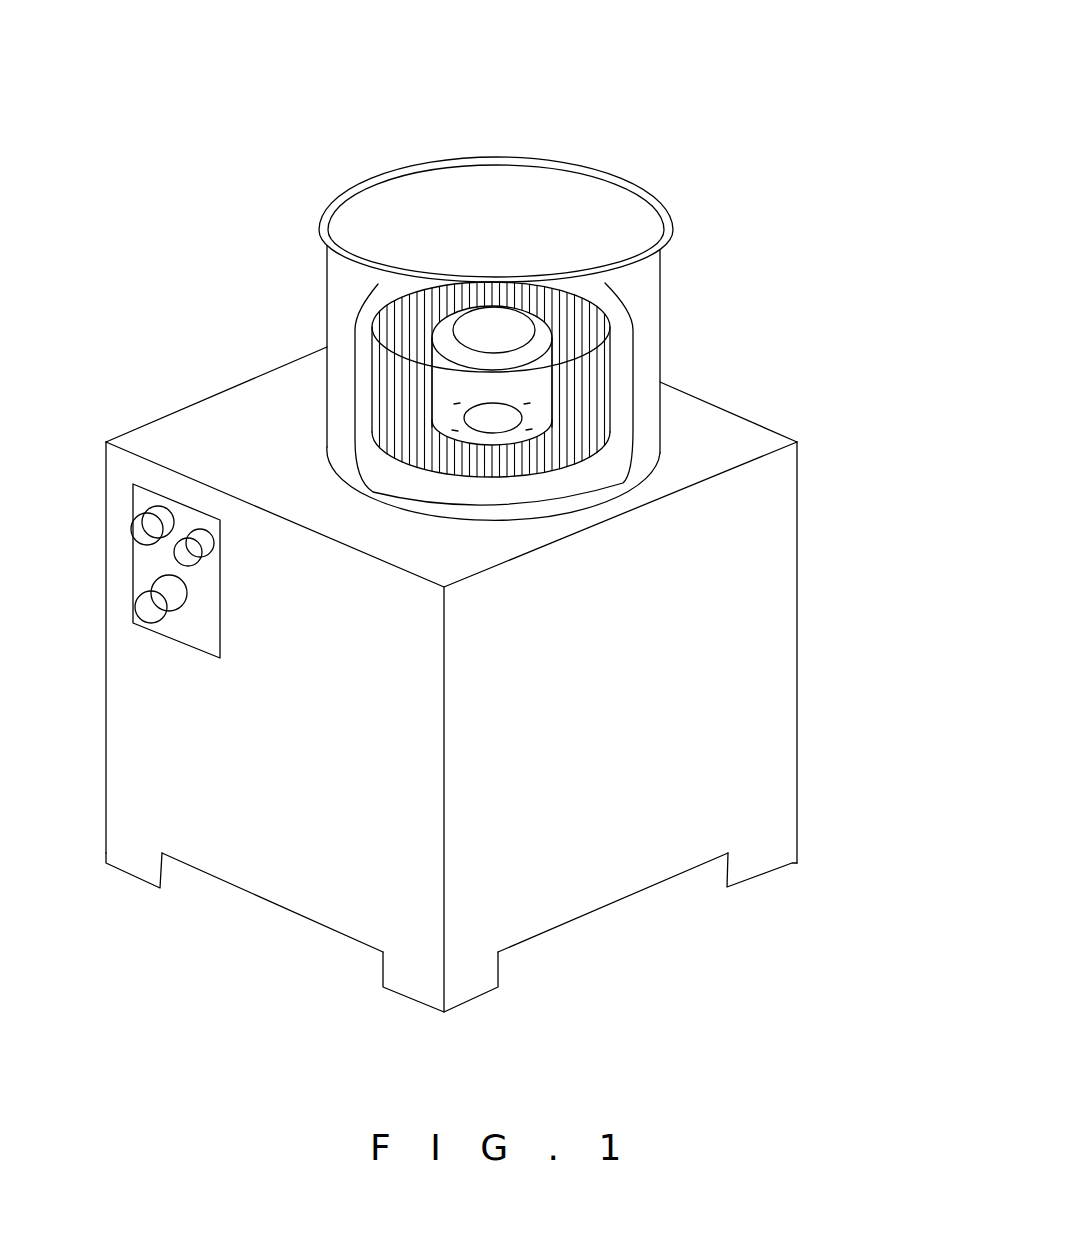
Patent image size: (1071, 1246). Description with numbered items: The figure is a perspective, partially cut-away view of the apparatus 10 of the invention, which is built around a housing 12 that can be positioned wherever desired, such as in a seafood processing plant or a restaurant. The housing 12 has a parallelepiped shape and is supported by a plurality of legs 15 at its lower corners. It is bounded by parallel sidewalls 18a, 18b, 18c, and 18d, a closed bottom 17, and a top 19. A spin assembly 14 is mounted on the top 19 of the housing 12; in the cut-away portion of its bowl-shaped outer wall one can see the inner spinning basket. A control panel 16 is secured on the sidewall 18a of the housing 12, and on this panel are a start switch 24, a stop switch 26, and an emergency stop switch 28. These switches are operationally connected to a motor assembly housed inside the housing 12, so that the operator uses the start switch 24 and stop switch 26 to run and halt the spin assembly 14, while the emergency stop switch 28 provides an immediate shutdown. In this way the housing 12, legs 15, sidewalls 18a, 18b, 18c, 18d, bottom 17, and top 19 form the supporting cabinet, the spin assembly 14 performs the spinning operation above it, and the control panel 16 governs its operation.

The apparatus 10 is at (690, 95).
The housing 12 is at (803, 626).
The spin assembly 14 is at (327, 290).
The legs 15 is at (130, 878).
The control panel 16 is at (133, 576).
The closed bottom 17 is at (607, 908).
The sidewall 18a is at (306, 730).
The sidewall 18b is at (230, 385).
The sidewall 18c is at (720, 407).
The sidewall 18d is at (655, 720).
The top 19 is at (276, 452).
The start switch 24 is at (133, 537).
The stop switch 26 is at (180, 557).
The emergency stop switch 28 is at (145, 607).